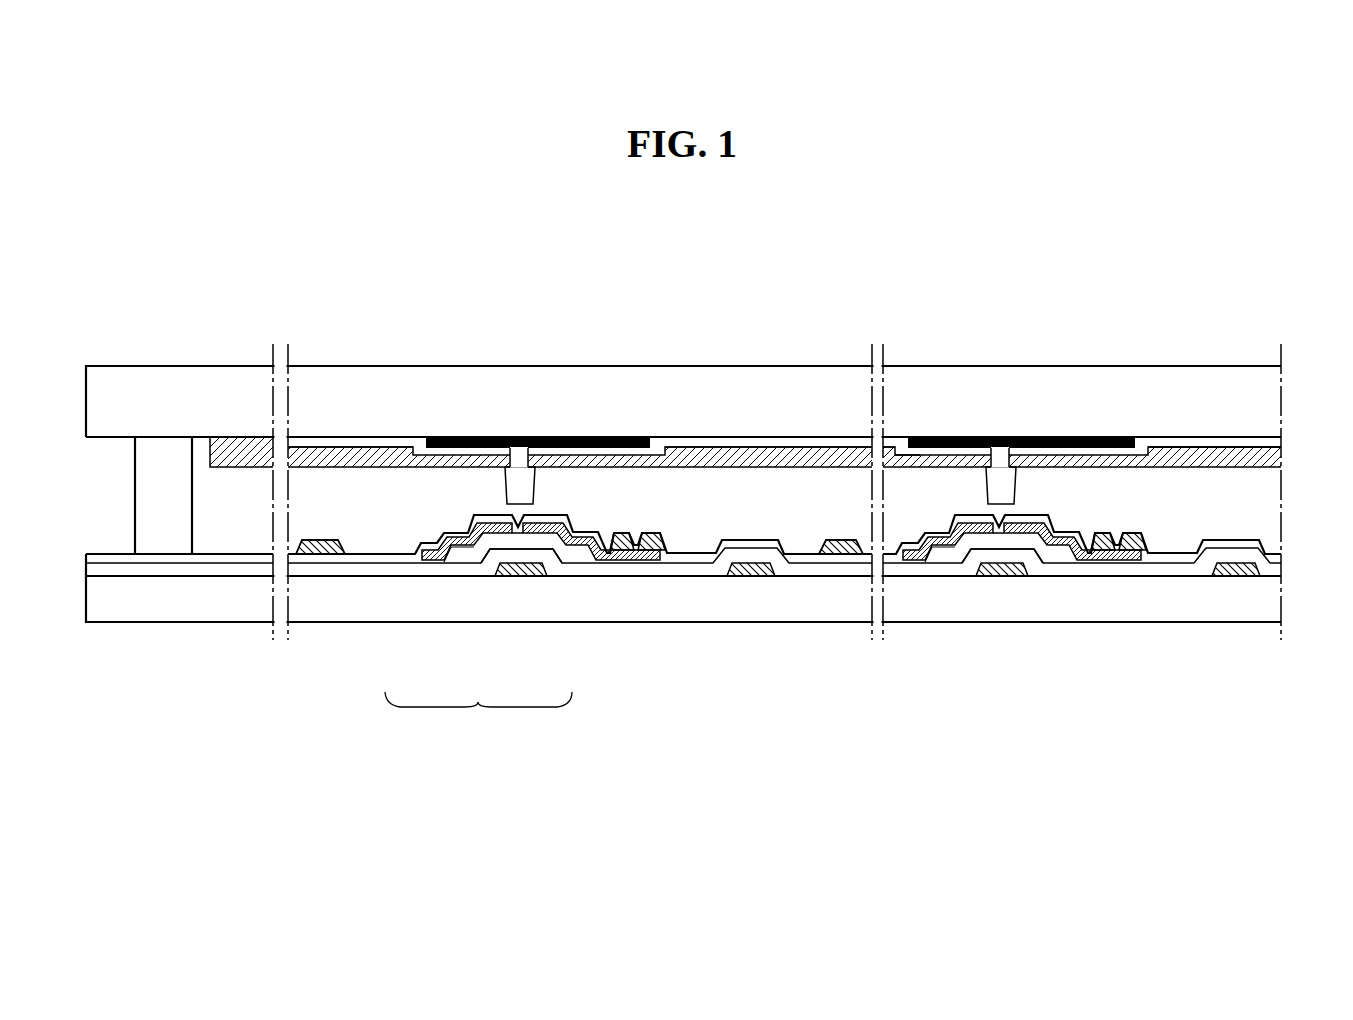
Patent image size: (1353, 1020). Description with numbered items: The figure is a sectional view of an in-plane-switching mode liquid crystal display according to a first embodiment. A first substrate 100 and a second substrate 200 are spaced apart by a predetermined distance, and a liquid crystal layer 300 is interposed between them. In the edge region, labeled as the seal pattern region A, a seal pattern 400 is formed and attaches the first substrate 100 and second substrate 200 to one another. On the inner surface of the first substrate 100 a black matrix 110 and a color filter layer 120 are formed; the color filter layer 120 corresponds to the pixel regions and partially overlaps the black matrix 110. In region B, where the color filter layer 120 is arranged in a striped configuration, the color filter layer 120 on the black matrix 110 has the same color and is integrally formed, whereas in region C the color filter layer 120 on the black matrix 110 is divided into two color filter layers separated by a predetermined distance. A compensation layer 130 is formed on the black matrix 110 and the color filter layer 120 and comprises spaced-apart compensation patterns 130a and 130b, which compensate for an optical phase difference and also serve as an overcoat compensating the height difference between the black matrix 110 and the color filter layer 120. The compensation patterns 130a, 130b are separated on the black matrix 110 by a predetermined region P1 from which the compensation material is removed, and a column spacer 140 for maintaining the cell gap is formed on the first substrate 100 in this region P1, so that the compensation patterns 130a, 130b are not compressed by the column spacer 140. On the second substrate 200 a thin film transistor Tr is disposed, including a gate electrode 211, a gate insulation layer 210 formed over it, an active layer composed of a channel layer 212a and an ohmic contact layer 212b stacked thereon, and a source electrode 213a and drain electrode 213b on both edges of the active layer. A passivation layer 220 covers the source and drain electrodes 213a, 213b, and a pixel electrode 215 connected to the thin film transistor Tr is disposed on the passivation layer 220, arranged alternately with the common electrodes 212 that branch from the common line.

The first substrate 100 is at (1272, 401).
The black matrix 110 is at (523, 437).
The color filter layer 120 is at (772, 442).
The compensation layer 130 is at (1272, 461).
The compensation pattern 130a is at (1216, 455).
The compensation pattern 130b is at (900, 458).
The column spacer 140 is at (538, 489).
The second substrate 200 is at (1272, 597).
The gate insulation layer 210 is at (1272, 570).
The gate electrode 211 is at (522, 578).
The common electrode 212 is at (748, 578).
The channel layer 212a is at (458, 560).
The ohmic contact layer 212b is at (488, 542).
The source electrode 213a is at (433, 562).
The drain electrode 213b is at (579, 548).
The pixel electrode 215 is at (320, 557).
The passivation layer 220 is at (1272, 548).
The liquid crystal layer 300 is at (1266, 508).
The seal pattern 400 is at (166, 505).
The predetermined region P1 is at (517, 468).
The thin film transistor Tr is at (478, 714).
The seal pattern region A is at (190, 338).
The region B is at (612, 338).
The region C is at (1115, 338).